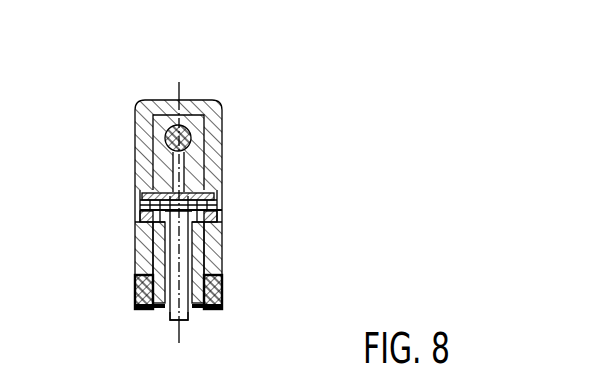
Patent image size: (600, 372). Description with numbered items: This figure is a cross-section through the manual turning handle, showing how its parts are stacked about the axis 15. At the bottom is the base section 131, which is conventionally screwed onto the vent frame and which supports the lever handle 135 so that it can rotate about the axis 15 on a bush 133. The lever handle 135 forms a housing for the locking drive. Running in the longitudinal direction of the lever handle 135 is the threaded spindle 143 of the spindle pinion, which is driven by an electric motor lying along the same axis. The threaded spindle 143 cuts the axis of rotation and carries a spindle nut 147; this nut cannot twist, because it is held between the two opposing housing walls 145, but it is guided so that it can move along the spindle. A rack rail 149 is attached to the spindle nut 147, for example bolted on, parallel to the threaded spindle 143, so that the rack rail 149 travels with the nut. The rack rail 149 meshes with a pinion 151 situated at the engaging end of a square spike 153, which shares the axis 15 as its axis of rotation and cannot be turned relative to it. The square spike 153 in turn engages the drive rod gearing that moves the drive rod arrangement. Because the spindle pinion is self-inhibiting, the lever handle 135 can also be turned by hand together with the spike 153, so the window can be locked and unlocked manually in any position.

The axis 15 is at (182, 333).
The base section 131 is at (212, 292).
The bush 133 is at (212, 253).
The lever handle 135 is at (218, 100).
The threaded spindle 143 is at (195, 110).
The housing walls 145 is at (155, 143).
The spindle nut 147 is at (170, 112).
The rack rail 149 is at (216, 210).
The pinion 151 is at (160, 211).
The square spike 153 is at (175, 322).